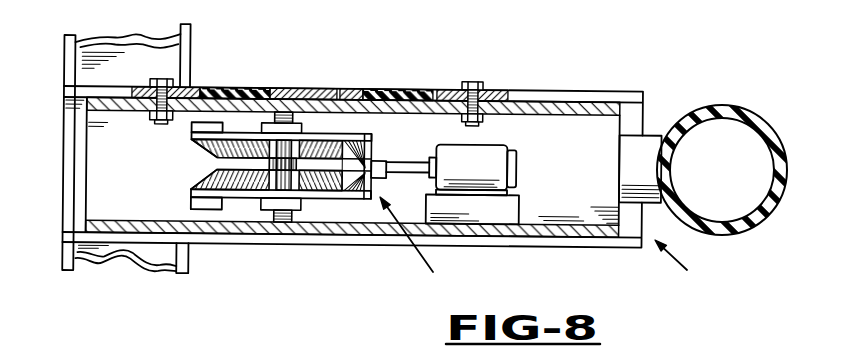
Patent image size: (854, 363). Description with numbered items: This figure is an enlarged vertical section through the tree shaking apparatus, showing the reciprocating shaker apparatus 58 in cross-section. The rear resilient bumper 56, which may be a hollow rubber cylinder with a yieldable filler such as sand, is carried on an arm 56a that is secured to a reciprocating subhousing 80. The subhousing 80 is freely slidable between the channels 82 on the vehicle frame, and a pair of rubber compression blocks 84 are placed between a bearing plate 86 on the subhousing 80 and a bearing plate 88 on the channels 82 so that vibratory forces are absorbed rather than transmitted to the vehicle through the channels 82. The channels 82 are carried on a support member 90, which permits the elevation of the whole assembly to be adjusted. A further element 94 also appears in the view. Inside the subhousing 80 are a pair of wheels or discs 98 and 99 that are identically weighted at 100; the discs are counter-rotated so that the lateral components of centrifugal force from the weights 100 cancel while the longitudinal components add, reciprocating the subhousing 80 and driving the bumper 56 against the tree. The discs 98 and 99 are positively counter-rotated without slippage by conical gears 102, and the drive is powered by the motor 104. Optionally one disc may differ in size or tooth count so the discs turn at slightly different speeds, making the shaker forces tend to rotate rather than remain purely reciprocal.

The rear resilient bumper 56 is at (750, 223).
The arm 56a is at (650, 140).
The reciprocating shaker apparatus 58 is at (683, 263).
The reciprocating subhousing 80 is at (593, 97).
The channels 82 is at (530, 243).
The rubber compression blocks 84 is at (238, 90).
The bearing plate 86 is at (190, 90).
The bearing plate 88 is at (310, 90).
The support member 90 is at (128, 255).
The pipe flange bracket 94 is at (157, 275).
The disc 98 is at (333, 127).
The disc 99 is at (323, 203).
The weights 100 is at (190, 208).
The conical gears 102 is at (427, 243).
The motor 104 is at (518, 160).